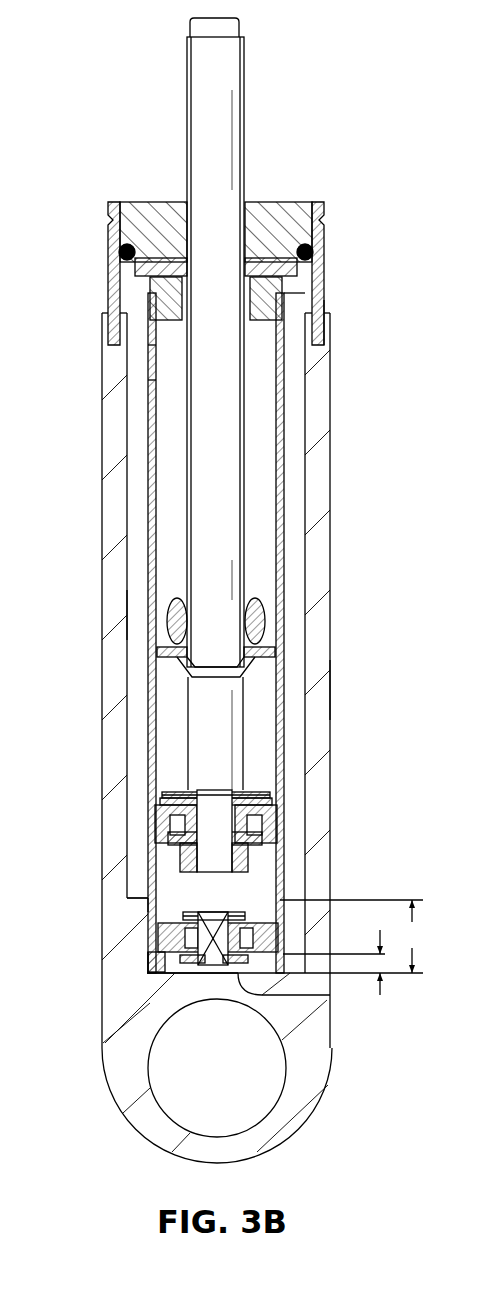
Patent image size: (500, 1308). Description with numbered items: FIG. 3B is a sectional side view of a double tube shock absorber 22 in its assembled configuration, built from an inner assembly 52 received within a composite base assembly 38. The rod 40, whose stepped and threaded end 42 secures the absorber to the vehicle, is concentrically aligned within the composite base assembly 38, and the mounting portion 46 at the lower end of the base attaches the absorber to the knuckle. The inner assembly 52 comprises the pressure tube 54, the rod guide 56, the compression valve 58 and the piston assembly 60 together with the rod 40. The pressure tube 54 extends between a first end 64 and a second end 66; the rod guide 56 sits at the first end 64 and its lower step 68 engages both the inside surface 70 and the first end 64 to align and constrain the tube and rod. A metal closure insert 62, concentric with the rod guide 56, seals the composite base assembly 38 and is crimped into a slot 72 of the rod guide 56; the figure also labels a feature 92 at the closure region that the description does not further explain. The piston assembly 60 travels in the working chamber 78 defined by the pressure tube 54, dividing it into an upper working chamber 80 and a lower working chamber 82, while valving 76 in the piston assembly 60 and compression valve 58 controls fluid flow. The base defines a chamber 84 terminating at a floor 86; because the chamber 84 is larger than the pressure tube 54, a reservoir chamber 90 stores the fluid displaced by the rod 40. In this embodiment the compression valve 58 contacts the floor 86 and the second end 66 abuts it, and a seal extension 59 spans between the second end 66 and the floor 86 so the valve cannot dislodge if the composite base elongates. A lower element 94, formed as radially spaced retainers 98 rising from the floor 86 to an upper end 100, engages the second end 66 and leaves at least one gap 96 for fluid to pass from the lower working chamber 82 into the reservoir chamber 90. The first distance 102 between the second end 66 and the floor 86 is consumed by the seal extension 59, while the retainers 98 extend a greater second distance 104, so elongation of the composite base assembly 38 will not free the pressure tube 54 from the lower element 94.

The shock absorber 22 is at (62, 316).
The composite base assembly 38 is at (333, 685).
The rod 40 is at (215, 133).
The stepped and threaded end 42 is at (212, 33).
The mounting portion 46 is at (302, 1047).
The inner assembly 52 is at (288, 487).
The pressure tube 54 is at (283, 443).
The rod guide 56 is at (277, 200).
The compression valve 58 is at (262, 908).
The seal extension 59 is at (148, 972).
The piston assembly 60 is at (268, 849).
The closure insert 62 is at (324, 301).
The first end 64 is at (292, 302).
The second end 66 is at (148, 962).
The lower step 68 is at (127, 285).
The inside surface 70 is at (152, 350).
The slot 72 is at (117, 221).
The valving 76 is at (176, 914).
The working chamber 78 is at (173, 398).
The upper working chamber 80 is at (159, 471).
The lower working chamber 82 is at (290, 540).
The chamber 84 is at (137, 610).
The floor 86 is at (330, 995).
The reservoir chamber 90 is at (284, 650).
The rod guide skirt 92 is at (328, 314).
The lower element 94 is at (124, 920).
The gap 96 is at (293, 926).
The retainers 98 is at (133, 946).
The upper end 100 is at (148, 897).
The first distance 102 is at (380, 995).
The second distance 104 is at (354, 936).